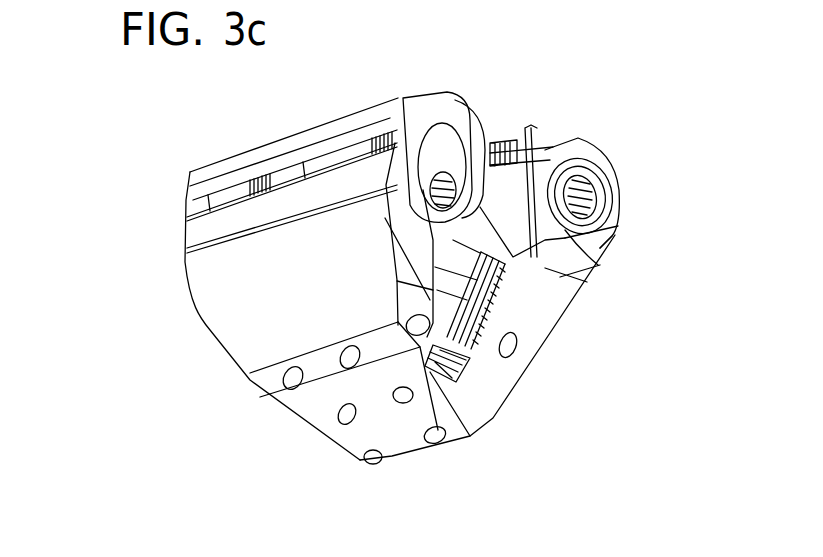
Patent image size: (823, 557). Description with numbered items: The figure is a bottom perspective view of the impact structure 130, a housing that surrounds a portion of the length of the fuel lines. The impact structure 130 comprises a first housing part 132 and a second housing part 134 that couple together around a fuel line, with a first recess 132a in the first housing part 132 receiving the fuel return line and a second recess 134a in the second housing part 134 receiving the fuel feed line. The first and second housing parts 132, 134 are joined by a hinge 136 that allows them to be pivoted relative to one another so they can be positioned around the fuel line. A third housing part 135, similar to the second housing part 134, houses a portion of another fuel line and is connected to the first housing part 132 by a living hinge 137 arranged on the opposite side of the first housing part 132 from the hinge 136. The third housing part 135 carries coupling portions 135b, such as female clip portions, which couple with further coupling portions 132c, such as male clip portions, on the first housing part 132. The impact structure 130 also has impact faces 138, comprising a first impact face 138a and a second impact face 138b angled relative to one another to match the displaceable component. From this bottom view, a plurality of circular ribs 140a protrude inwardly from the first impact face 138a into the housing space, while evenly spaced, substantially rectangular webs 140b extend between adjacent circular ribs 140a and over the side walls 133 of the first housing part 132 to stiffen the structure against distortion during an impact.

The impact structure 130 is at (630, 125).
The first housing part 132 is at (587, 282).
The first recess 132a is at (387, 183).
The further coupling portions 132c is at (528, 126).
The side walls 133 is at (547, 320).
The second housing part 134 is at (388, 117).
The second recess 134a is at (447, 92).
The third housing part 135 is at (612, 167).
The coupling portions 135b is at (545, 150).
The hinge 136 is at (208, 172).
The living hinge 137 is at (618, 230).
The impact faces 138 is at (93, 432).
The first impact face 138a is at (335, 437).
The second impact face 138b is at (237, 343).
The circular ribs 140a is at (530, 347).
The webs 140b is at (473, 348).